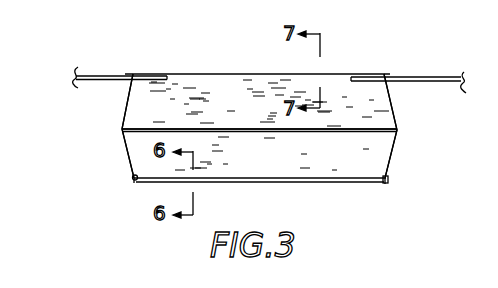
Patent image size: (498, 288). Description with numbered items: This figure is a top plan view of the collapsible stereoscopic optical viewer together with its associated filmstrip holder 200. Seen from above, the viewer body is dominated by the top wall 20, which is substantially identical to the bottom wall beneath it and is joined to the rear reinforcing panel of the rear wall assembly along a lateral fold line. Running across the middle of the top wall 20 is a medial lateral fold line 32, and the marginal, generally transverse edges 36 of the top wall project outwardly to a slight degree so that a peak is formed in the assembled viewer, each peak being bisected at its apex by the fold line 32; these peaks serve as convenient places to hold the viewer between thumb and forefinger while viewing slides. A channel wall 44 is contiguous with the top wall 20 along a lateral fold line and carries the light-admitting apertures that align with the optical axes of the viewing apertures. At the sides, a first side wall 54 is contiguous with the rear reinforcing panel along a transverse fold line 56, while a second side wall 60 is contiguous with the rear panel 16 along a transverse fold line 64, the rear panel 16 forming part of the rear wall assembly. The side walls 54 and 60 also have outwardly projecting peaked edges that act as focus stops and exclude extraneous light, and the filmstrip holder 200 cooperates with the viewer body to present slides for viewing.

The rear panel 16 is at (268, 183).
The top wall 20 is at (233, 118).
The medial lateral fold line 32 is at (263, 132).
The marginal transverse edge of the top wall 36 is at (128, 102).
The channel wall 44 is at (210, 73).
The first side wall 54 is at (388, 178).
The transverse fold line 56 is at (386, 183).
The second side wall 60 is at (131, 175).
The transverse fold line 64 is at (134, 183).
The filmstrip holder 200 is at (487, 29).